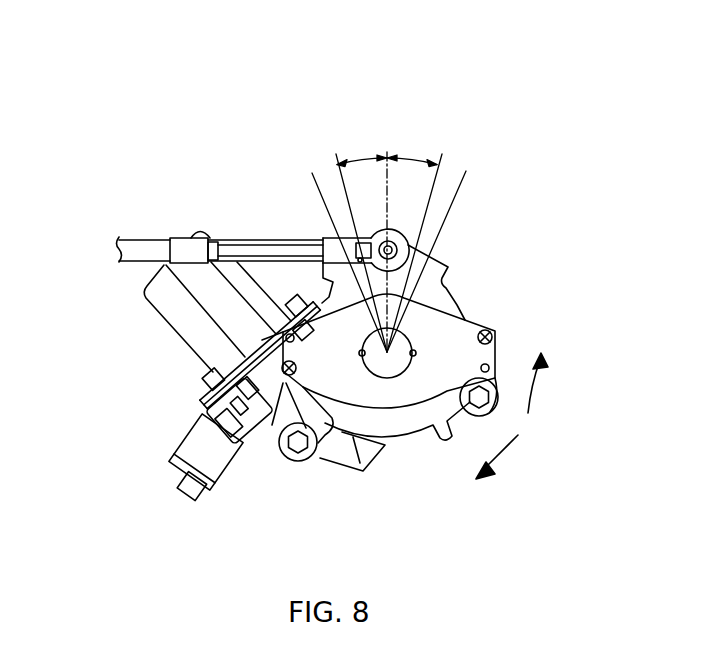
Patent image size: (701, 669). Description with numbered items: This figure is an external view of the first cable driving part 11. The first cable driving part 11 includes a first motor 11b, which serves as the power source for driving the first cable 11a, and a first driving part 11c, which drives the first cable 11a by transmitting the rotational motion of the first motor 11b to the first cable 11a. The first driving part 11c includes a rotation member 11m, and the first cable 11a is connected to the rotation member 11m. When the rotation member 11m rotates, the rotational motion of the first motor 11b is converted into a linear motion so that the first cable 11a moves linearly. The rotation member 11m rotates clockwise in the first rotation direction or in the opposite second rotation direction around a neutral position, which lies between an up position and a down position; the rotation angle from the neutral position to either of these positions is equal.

The first cable driving part 11 is at (58, 45).
The first cable 11a is at (140, 247).
The first motor 11b is at (188, 322).
The first driving part 11c is at (514, 327).
The rotation member 11m is at (436, 277).